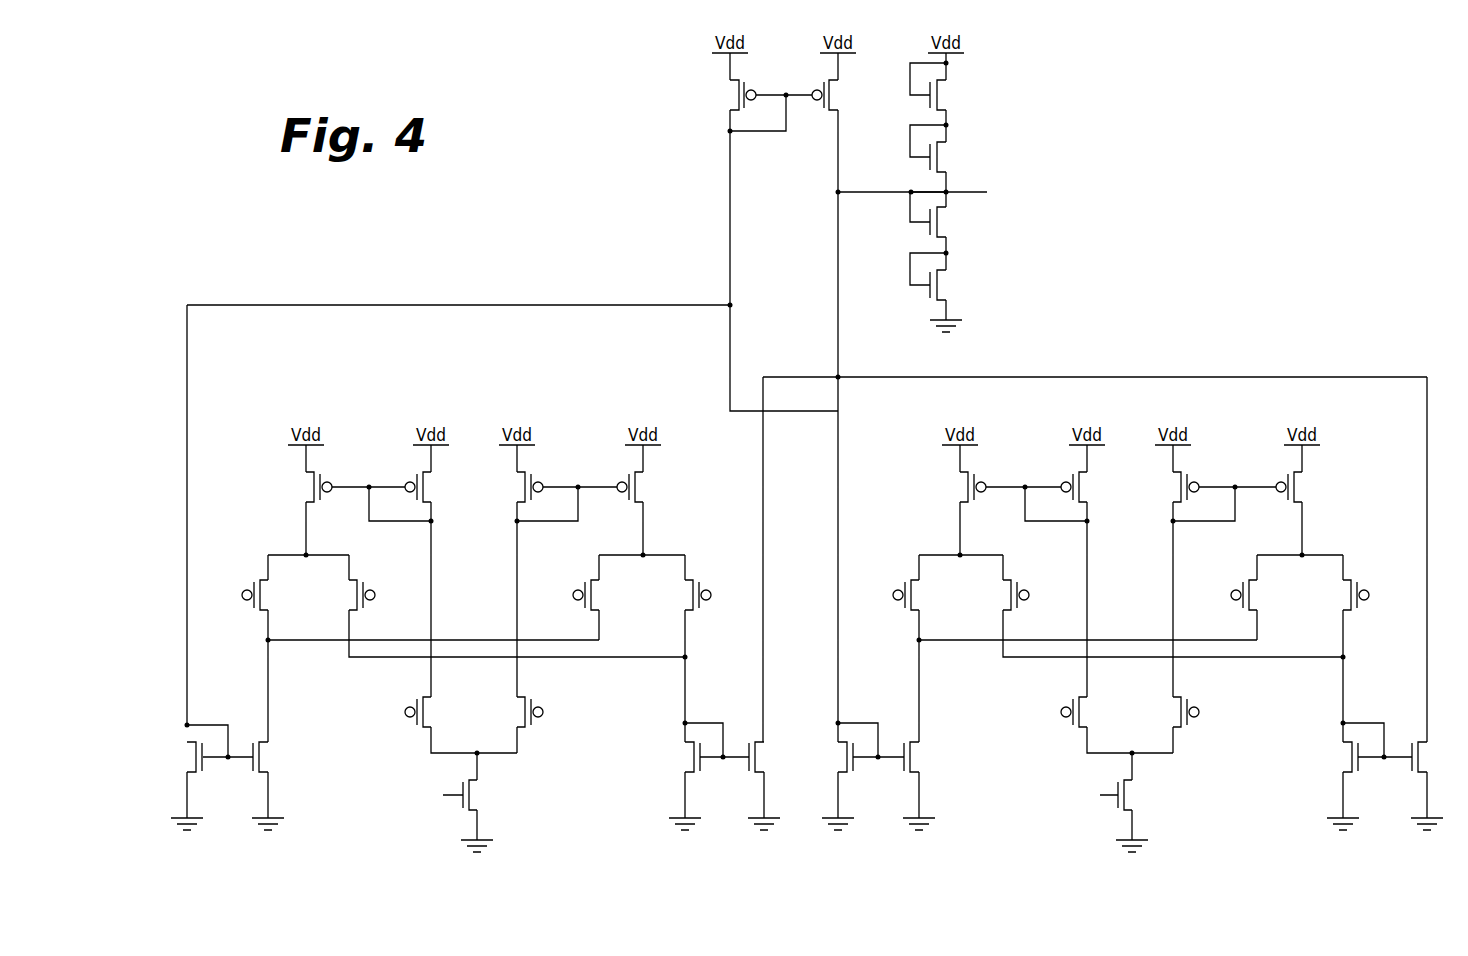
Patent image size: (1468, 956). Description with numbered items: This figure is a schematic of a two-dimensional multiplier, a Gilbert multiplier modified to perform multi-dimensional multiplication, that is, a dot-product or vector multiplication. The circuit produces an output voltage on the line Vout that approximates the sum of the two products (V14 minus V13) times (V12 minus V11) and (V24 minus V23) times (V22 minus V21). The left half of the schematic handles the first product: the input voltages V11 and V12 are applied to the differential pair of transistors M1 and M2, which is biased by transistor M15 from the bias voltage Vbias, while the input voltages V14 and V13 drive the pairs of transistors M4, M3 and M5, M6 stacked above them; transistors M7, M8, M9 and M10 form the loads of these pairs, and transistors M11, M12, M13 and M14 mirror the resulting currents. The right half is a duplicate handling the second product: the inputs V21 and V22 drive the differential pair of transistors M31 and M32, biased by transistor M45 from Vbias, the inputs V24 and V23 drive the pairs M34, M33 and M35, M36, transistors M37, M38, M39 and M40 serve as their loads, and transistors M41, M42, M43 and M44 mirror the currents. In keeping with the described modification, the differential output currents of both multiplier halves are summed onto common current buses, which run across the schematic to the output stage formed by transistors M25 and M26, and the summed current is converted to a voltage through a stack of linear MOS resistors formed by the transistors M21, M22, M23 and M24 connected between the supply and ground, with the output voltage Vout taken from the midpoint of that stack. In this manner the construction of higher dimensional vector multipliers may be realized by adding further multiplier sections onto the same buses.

The PMOS transistor M1 of first differential input pair M1 is at (434, 712).
The PMOS transistor M2 of first differential input pair M2 is at (515, 712).
The PMOS transistor M3 of second differential pair M3 is at (347, 595).
The PMOS transistor M4 of second differential pair M4 is at (269, 595).
The PMOS transistor M5 of third differential pair M5 is at (601, 595).
The PMOS transistor M6 of third differential pair M6 is at (682, 595).
The PMOS current mirror load transistor M7 is at (306, 487).
The PMOS current mirror load transistor M8 is at (431, 487).
The PMOS current mirror load transistor M9 is at (516, 487).
The PMOS current mirror load transistor M10 is at (650, 487).
The NMOS current mirror transistor M11 is at (176, 757).
The NMOS current mirror transistor M12 is at (278, 757).
The NMOS current mirror transistor M13 is at (673, 757).
The NMOS current mirror transistor M14 is at (774, 757).
The NMOS bias current source transistor M15 is at (488, 795).
The diode-connected load transistor M21 is at (946, 86).
The diode-connected load transistor M22 is at (946, 148).
The diode-connected load transistor M23 is at (946, 214).
The diode-connected load transistor M24 is at (946, 276).
The PMOS output current mirror transistor M25 is at (724, 95).
The PMOS output current mirror transistor M26 is at (844, 95).
The PMOS transistor M31 of fourth differential input pair M31 is at (1092, 712).
The PMOS transistor M32 of fourth differential input pair M32 is at (1168, 712).
The PMOS transistor M33 of fifth differential pair M33 is at (998, 595).
The PMOS transistor M34 of fifth differential pair M34 is at (924, 595).
The PMOS transistor M35 of sixth differential pair M35 is at (1262, 595).
The PMOS transistor M36 of sixth differential pair M36 is at (1337, 595).
The PMOS current mirror load transistor M37 is at (953, 487).
The PMOS current mirror load transistor M38 is at (1092, 487).
The PMOS current mirror load transistor M39 is at (1168, 487).
The PMOS current mirror load transistor M40 is at (1308, 487).
The NMOS current mirror transistor M41 is at (828, 757).
The NMOS current mirror transistor M42 is at (929, 757).
The NMOS current mirror transistor M43 is at (1331, 757).
The NMOS current mirror transistor M44 is at (1437, 757).
The NMOS bias current source transistor M45 is at (1144, 795).
The input voltage V11 is at (405, 712).
The input voltage V12 is at (543, 712).
The input voltage V13 is at (573, 595).
The input voltage V14 is at (722, 595).
The input voltage V21 is at (1061, 712).
The input voltage V22 is at (1199, 712).
The input voltage V23 is at (1231, 595).
The input voltage V24 is at (1383, 595).
The output voltage Vout is at (935, 191).
The bias voltage Vbias is at (756, 794).